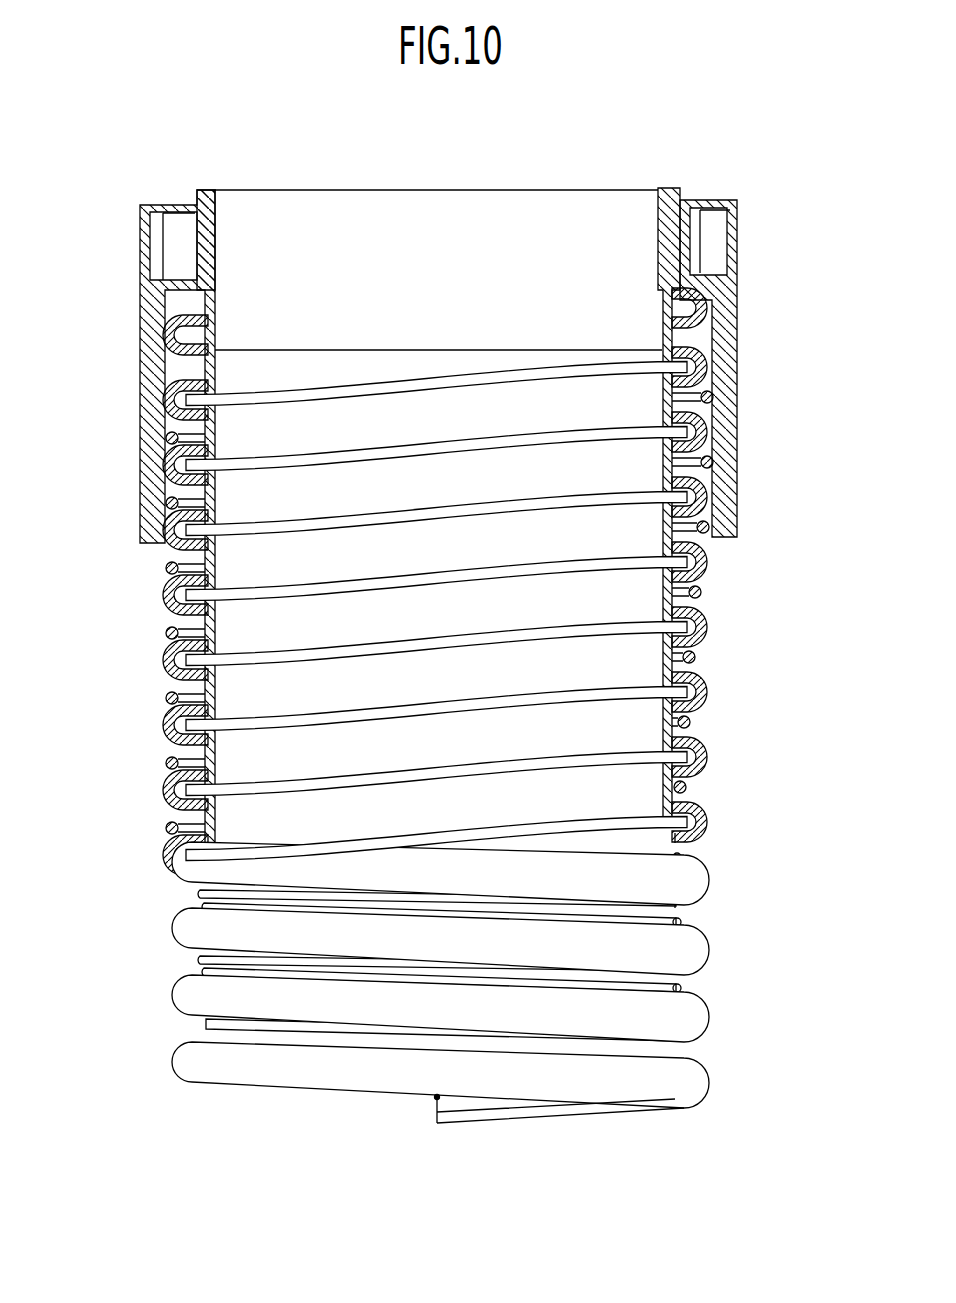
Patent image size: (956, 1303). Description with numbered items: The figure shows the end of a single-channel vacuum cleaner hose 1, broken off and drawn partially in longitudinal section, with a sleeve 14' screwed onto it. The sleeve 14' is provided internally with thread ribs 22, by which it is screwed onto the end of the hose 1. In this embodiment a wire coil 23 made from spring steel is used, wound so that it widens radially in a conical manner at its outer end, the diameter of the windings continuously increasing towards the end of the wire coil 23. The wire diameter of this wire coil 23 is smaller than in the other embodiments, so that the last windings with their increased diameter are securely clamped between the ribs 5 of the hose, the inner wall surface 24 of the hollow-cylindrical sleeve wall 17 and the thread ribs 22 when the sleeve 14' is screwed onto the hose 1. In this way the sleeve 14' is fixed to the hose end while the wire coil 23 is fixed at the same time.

The hose 1 is at (291, 1086).
The ribs 5 is at (712, 693).
The sleeve 14' is at (133, 366).
The sleeve wall 17 is at (730, 450).
The thread ribs 22 is at (698, 340).
The wire coil 23 is at (697, 593).
The inner wall surface 24 is at (712, 503).